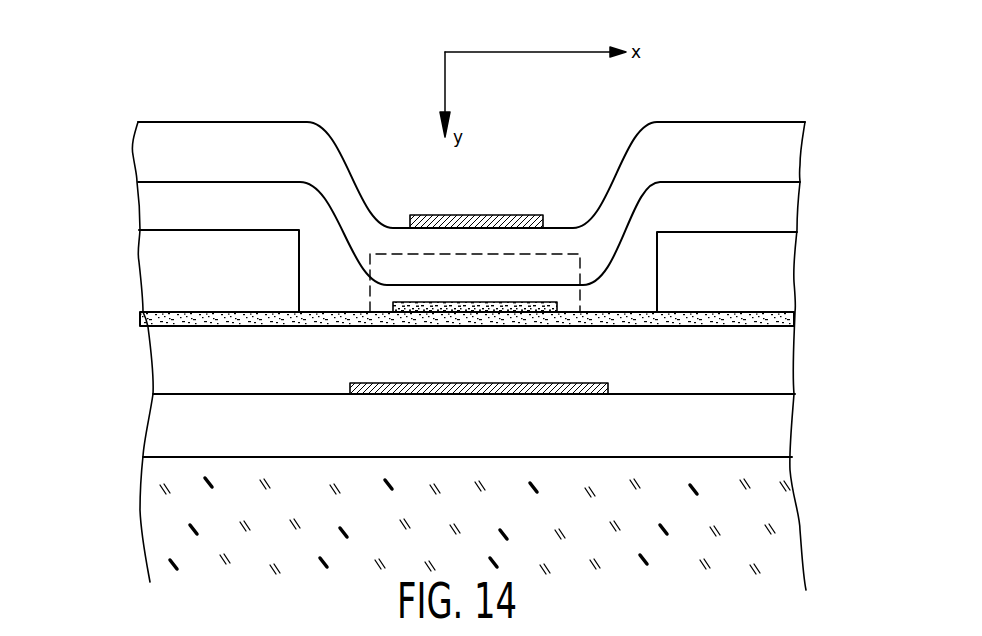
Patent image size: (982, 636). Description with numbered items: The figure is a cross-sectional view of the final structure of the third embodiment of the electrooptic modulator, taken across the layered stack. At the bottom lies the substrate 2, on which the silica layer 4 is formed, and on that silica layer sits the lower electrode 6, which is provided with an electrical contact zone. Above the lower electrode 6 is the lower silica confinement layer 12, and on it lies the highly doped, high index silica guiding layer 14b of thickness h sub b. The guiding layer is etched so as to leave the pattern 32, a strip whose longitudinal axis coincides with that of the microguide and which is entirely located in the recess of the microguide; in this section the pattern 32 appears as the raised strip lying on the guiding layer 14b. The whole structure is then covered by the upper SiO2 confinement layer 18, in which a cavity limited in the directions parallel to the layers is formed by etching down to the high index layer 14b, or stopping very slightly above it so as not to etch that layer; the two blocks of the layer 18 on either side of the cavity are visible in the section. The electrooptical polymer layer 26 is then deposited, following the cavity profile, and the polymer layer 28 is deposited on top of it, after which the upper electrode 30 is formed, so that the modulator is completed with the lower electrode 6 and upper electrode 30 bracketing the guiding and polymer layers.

The substrate 2 is at (170, 510).
The silica layer 4 is at (170, 432).
The lower electrode 6 is at (377, 383).
The lower silica confinement layer 12 is at (183, 365).
The highly doped silica guiding layer 14b is at (780, 322).
The upper SiO2 confinement layer 18 is at (180, 273).
The electrooptical polymer layer 26 is at (158, 206).
The polymer layer 28 is at (148, 152).
The upper electrode 30 is at (487, 215).
The pattern 32 is at (560, 305).